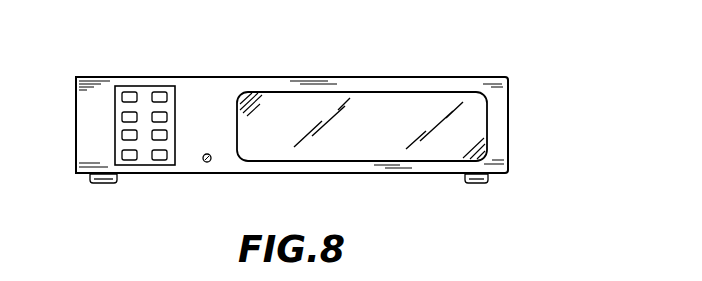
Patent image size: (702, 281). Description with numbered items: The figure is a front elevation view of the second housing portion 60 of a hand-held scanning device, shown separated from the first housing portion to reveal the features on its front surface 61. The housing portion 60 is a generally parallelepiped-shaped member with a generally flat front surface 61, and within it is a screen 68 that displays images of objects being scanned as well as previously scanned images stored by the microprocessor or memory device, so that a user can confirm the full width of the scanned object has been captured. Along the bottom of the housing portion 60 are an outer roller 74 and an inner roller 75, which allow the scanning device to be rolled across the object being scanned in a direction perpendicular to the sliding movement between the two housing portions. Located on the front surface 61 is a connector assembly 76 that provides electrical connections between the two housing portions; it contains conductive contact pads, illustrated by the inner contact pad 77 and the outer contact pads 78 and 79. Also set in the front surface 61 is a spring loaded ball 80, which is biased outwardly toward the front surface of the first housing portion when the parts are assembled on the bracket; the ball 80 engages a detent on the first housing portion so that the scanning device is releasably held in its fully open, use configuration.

The second housing portion 60 is at (508, 107).
The front surface 61 is at (497, 147).
The screen 68 is at (402, 94).
The second housing portion outer roller 74 is at (480, 184).
The second housing portion inner roller 75 is at (103, 184).
The connector assembly 76 is at (141, 87).
The inner contact pad 77 is at (175, 114).
The outer contact pad 78 is at (122, 117).
The outer contact pad 79 is at (121, 136).
The spring loaded ball 80 is at (210, 162).